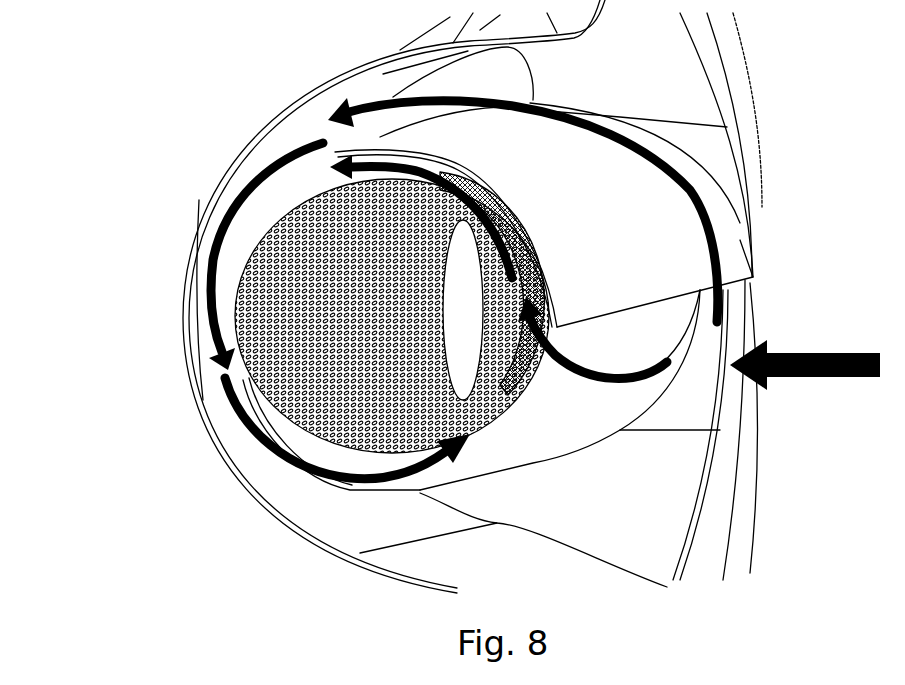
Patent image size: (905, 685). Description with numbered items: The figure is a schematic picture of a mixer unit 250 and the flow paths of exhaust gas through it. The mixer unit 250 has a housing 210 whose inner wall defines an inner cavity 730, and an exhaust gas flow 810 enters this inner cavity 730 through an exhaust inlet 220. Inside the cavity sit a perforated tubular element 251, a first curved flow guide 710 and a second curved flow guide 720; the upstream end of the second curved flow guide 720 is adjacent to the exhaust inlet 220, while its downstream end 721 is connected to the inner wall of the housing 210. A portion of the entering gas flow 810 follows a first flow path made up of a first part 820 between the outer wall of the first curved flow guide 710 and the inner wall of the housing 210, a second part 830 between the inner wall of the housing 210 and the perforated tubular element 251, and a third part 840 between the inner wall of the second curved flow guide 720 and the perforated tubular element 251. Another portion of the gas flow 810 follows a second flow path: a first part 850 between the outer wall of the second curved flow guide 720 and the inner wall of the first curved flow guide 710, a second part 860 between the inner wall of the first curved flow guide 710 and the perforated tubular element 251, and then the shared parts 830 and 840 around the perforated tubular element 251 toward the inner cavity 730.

The housing 210 is at (300, 97).
The exhaust inlet 220 is at (730, 500).
The mixer unit 250 is at (830, 64).
The perforated tubular element 251 is at (247, 243).
The first curved flow guide 710 is at (544, 187).
The second curved flow guide 720 is at (471, 390).
The downstream end of the second curved flow guide 721 is at (233, 370).
The inner cavity 730 is at (540, 438).
The exhaust gas flow 810 is at (783, 377).
The first part of the first flow path 820 is at (710, 250).
The second part of the first flow path 830 is at (262, 164).
The third part of the first flow path 840 is at (250, 420).
The first part of the second flow path 850 is at (563, 353).
The second part of the second flow path 860 is at (507, 250).